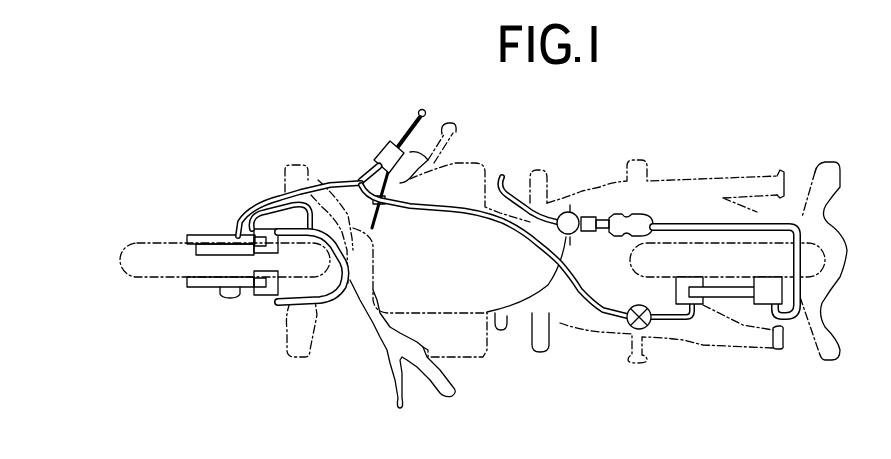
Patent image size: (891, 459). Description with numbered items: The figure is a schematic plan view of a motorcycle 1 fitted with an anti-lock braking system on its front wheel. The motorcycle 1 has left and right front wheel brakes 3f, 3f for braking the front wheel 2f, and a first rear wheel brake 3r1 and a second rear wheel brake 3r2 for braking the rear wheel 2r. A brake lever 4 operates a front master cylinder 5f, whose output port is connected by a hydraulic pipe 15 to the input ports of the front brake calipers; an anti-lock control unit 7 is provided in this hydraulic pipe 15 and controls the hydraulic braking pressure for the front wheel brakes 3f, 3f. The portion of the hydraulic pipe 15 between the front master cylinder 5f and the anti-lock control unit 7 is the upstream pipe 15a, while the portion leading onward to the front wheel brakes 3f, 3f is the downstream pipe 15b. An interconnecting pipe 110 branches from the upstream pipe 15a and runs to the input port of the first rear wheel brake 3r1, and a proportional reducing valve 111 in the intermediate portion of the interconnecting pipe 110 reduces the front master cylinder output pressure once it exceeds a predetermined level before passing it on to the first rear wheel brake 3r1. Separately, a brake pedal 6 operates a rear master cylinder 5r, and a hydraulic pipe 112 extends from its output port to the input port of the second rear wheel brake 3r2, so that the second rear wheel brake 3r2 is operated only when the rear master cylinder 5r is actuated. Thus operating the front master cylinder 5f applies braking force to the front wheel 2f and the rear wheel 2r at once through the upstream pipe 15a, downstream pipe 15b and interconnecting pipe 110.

The motorcycle 1 is at (599, 182).
The front wheel 2f is at (134, 278).
The rear wheel 2r is at (853, 247).
The front wheel brake 3f is at (210, 234).
The first rear wheel brake 3r1 is at (705, 306).
The second rear wheel brake 3r2 is at (755, 306).
The brake lever 4 is at (416, 127).
The front master cylinder 5f is at (381, 157).
The rear master cylinder 5r is at (642, 222).
The brake pedal 6 is at (502, 176).
The anti-lock control unit 7 is at (197, 249).
The hydraulic pipe 15 is at (322, 173).
The upstream pipe 15a is at (262, 200).
The downstream pipe 15b is at (348, 258).
The interconnecting pipe 110 is at (505, 226).
The proportional reducing valve 111 is at (632, 327).
The hydraulic pipe 112 is at (690, 229).